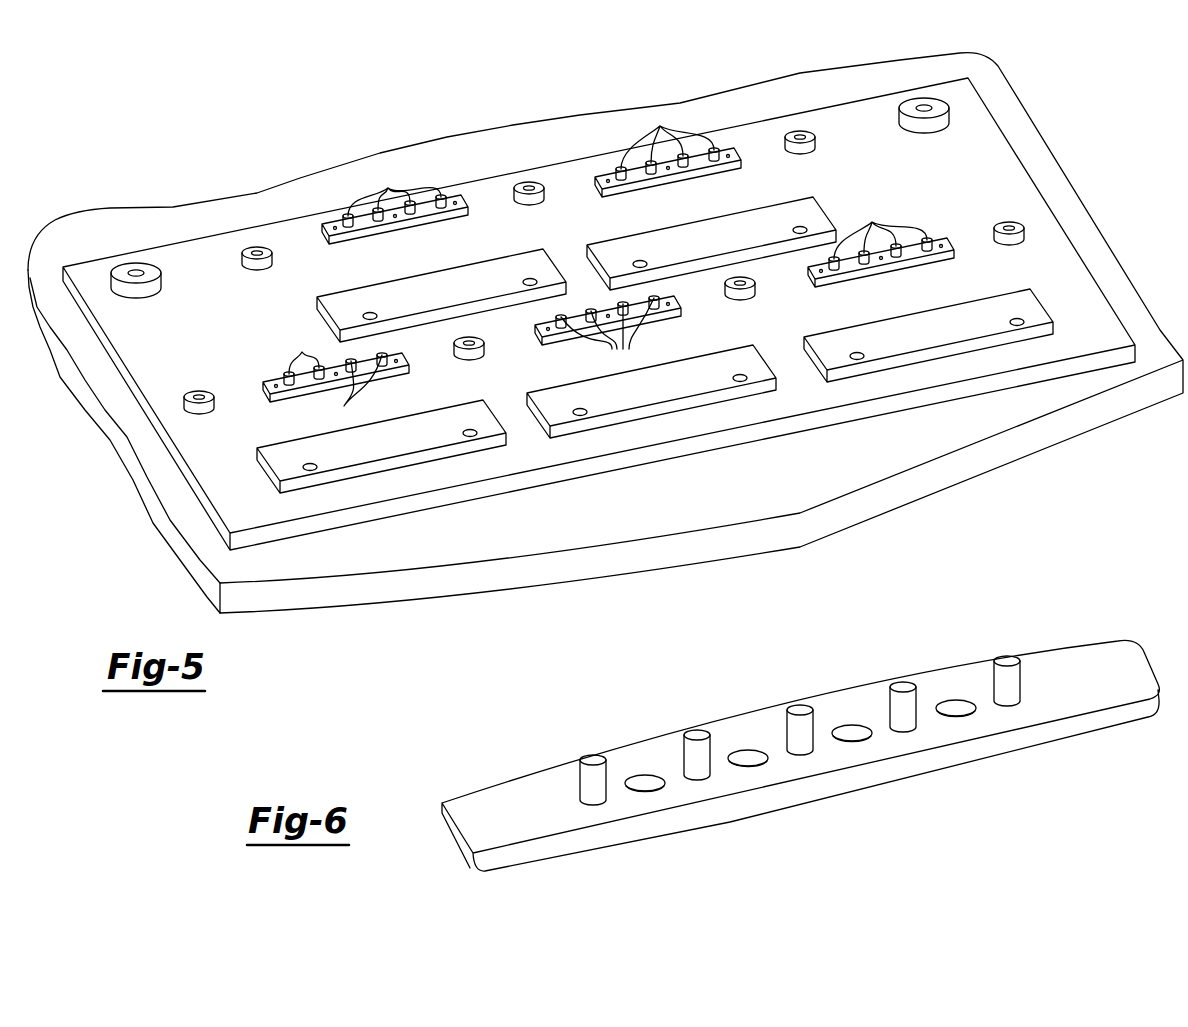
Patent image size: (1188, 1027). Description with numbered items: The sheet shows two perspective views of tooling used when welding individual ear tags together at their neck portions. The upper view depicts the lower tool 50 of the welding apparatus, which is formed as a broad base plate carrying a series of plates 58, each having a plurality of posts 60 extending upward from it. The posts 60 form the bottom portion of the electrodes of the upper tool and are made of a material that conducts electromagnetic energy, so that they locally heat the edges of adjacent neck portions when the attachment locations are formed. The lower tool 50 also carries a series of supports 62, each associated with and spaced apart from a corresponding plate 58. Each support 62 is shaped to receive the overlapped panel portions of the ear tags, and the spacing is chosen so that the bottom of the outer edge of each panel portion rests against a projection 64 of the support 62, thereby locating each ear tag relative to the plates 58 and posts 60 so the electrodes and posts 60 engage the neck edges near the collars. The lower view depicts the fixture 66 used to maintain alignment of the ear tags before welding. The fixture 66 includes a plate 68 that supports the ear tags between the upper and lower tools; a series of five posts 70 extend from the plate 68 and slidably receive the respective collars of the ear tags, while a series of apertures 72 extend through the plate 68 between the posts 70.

In FIG. 5, the lower tool 50 is at (1010, 147).
In FIG. 5, the plates 58 is at (457, 203).
In FIG. 5, the posts 60 is at (608, 258).
In FIG. 5, the supports 62 is at (330, 302).
In FIG. 5, the projection 64 is at (478, 292).
In FIG. 6, the fixture 66 is at (800, 724).
In FIG. 6, the plate 68 is at (1101, 661).
In FIG. 6, the posts 70 is at (592, 756).
In FIG. 6, the apertures 72 is at (645, 782).